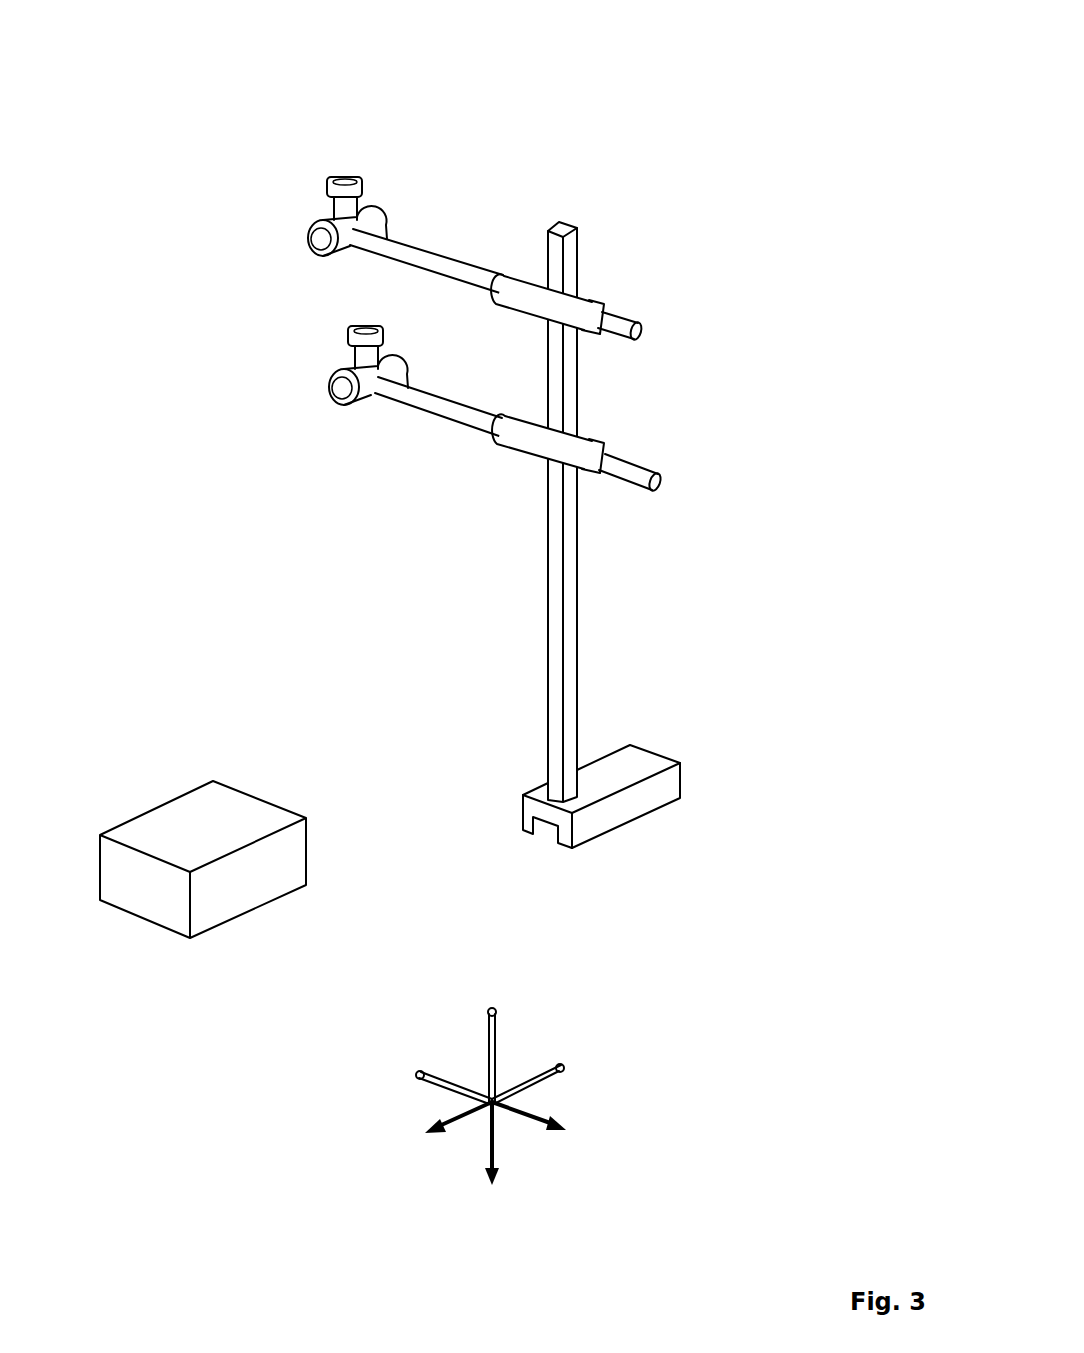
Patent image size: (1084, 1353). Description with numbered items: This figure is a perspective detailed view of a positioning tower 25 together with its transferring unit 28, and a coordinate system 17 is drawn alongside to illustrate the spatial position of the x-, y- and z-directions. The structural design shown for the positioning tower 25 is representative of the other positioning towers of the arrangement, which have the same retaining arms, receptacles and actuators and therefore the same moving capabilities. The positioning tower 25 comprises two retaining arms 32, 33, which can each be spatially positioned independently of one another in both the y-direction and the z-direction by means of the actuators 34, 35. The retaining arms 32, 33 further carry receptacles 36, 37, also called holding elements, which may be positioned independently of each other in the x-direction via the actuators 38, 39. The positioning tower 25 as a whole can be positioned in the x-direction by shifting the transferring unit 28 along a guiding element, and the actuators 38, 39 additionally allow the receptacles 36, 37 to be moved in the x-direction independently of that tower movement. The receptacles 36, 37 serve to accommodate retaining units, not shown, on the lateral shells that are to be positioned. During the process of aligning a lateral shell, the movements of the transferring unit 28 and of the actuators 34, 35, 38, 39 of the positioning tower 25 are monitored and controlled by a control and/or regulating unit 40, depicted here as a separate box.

The coordinate system 17 is at (537, 1087).
The positioning tower 25 is at (560, 222).
The transferring unit 28 is at (643, 752).
The retaining arm 32 is at (471, 270).
The retaining arm 33 is at (433, 402).
The actuator 34 is at (577, 302).
The actuator 35 is at (577, 445).
The receptacle 36 is at (330, 178).
The receptacle 37 is at (352, 338).
The actuator 38 is at (382, 213).
The actuator 39 is at (363, 400).
The control and/or regulating unit 40 is at (155, 825).